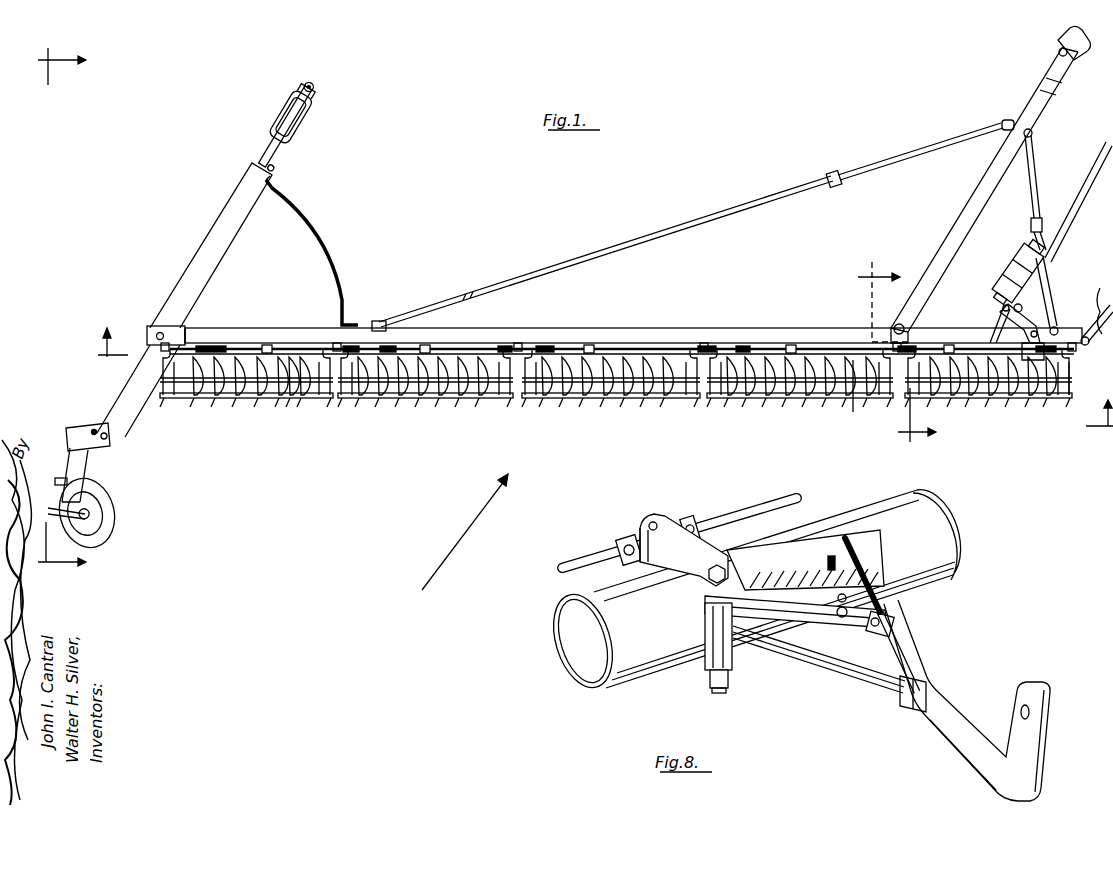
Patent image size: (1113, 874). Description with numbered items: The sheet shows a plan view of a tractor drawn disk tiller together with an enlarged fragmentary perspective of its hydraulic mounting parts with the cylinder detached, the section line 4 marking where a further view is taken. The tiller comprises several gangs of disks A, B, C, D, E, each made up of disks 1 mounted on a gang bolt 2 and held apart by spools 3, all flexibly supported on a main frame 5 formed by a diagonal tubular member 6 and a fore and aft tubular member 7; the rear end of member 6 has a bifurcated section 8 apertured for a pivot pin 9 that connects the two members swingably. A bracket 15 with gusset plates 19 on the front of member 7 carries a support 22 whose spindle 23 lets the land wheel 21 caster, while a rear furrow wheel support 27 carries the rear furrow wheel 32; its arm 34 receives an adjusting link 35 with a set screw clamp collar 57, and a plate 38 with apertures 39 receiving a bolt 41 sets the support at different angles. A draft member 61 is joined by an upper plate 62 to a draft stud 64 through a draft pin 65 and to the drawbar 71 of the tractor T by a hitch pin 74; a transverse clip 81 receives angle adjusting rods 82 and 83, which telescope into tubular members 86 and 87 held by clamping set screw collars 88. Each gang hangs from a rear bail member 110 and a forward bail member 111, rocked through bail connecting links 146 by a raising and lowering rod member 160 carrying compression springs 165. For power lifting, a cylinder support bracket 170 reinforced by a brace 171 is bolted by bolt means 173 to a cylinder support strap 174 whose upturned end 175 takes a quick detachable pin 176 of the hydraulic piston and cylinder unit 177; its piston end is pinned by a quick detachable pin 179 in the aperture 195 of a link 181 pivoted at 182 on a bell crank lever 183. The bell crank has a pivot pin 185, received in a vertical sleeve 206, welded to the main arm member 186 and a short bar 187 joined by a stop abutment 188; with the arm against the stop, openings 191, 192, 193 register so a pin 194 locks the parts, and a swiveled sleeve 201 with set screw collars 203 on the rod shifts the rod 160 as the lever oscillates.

In FIG. 1, the disks 1 is at (216, 398).
In FIG. 1, the gang bolt 2 is at (62, 306).
In FIG. 1, the spools 3 is at (290, 380).
In FIG. 1, the section line 4- 4 is at (96, 365).
In FIG. 1, the main frame 5 is at (680, 322).
In FIG. 1, the diagonally disposed tubular member 6 is at (727, 337).
In FIG. 1, the fore and aft tubular member 7 is at (222, 222).
In FIG. 1, the bifurcated section 8 is at (187, 333).
In FIG. 1, the pivot pin 9 is at (157, 330).
In FIG. 1, the bracket 15 is at (280, 135).
In FIG. 1, the gusset plates 19 is at (308, 96).
In FIG. 1, the land wheel 21 is at (300, 121).
In FIG. 1, the support 22 is at (283, 103).
In FIG. 1, the spindle 23 is at (316, 87).
In FIG. 1, the rear furrow wheel support 27 is at (96, 472).
In FIG. 1, the rear furrow wheel 32 is at (110, 498).
In FIG. 1, the arm 34 is at (62, 512).
In FIG. 1, the adjusting link 35 is at (66, 470).
In FIG. 1, the plate 38 is at (78, 430).
In FIG. 1, the apertures 39 is at (92, 426).
In FIG. 1, the bolt 41 is at (110, 434).
In FIG. 1, the adjusting set screw clamp collar 57 is at (56, 482).
In FIG. 1, the draft member 61 is at (958, 210).
In FIG. 1, the upper plate 62 is at (912, 328).
In FIG. 1, the draft stud 64 is at (870, 322).
In FIG. 1, the draft pin 65 is at (897, 323).
In FIG. 1, the drawbar 71 is at (1083, 54).
In FIG. 1, the hitch pin 74 is at (1058, 53).
In FIG. 1, the transverse clip 81 is at (1006, 120).
In FIG. 1, the angle adjusting rod 82 is at (948, 150).
In FIG. 1, the angle adjusting rod 83 is at (1034, 180).
In FIG. 1, the tubular member 86 is at (724, 214).
In FIG. 1, the tubular member 87 is at (1048, 280).
In FIG. 1, the clamping set screw collars 88 is at (836, 170).
In FIG. 1, the rear bail member 110 is at (520, 353).
In FIG. 1, the forward bail member 111 is at (516, 360).
In FIG. 1, the bail connecting links 146 is at (340, 345).
In FIG. 1, the raising and lowering rod member 160 is at (484, 345).
In FIG. 8, the raising and lowering rod member 160 is at (748, 512).
In FIG. 1, the compression spring 165 is at (212, 348).
In FIG. 8, the cylinder support bracket 170 is at (936, 675).
In FIG. 8, the brace 171 is at (795, 642).
In FIG. 8, the bolt means 173 is at (893, 624).
In FIG. 8, the cylinder support strap 174 is at (960, 757).
In FIG. 8, the upwardly turned forward end 175 is at (1028, 736).
In FIG. 1, the quick detachable pin 176 is at (1050, 262).
In FIG. 1, the hydraulic piston and cylinder unit 177 is at (1024, 268).
In FIG. 1, the quick detachable pin 179 is at (1002, 310).
In FIG. 8, the link 181 is at (773, 618).
In FIG. 8, the pivot 182 is at (686, 600).
In FIG. 1, the bell crank lever 183 is at (1028, 326).
In FIG. 8, the bell crank lever 183 is at (668, 578).
In FIG. 8, the pivot pin 185 is at (720, 566).
In FIG. 8, the main arm member 186 is at (776, 566).
In FIG. 8, the short bar 187 is at (716, 642).
In FIG. 8, the stop abutment 188 is at (831, 556).
In FIG. 8, the opening 191 is at (850, 598).
In FIG. 8, the opening 192 is at (840, 617).
In FIG. 8, the opening 193 is at (856, 572).
In FIG. 1, the pin 194 is at (1025, 312).
In FIG. 8, the aperture 195 is at (893, 630).
In FIG. 1, the swiveled sleeve 201 is at (1030, 355).
In FIG. 8, the swiveled sleeve 201 is at (638, 527).
In FIG. 8, the set screw collars 203 is at (624, 538).
In FIG. 8, the vertical sleeve 206 is at (721, 690).
In FIG. 1, the tractor T is at (1054, 37).
In FIG. 1, the gang of disks A is at (250, 408).
In FIG. 1, the gang of disks B is at (460, 408).
In FIG. 1, the gang of disks C is at (626, 412).
In FIG. 1, the gang of disks D is at (813, 412).
In FIG. 1, the gang of disks E is at (986, 414).